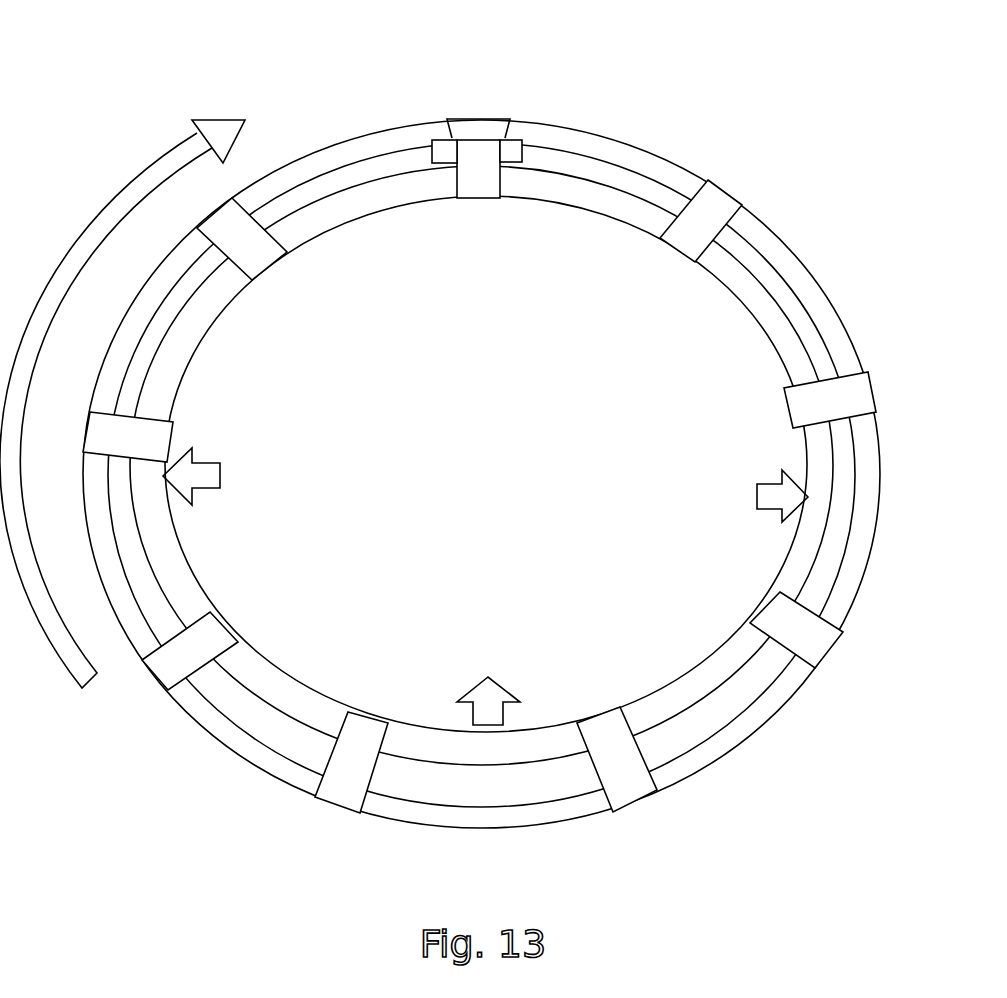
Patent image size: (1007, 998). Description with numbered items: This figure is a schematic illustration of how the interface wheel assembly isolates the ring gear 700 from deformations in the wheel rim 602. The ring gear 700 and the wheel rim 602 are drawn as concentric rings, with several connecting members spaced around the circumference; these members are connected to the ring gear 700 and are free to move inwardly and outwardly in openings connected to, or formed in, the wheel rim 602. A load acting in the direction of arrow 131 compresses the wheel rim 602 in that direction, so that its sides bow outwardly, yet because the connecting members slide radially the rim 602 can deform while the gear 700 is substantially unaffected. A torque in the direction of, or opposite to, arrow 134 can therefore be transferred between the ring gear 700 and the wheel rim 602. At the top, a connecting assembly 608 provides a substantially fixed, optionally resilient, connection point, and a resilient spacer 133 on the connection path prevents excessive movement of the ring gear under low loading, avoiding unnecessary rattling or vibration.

The ring gear 700 is at (622, 152).
The wheel rim 602 is at (592, 203).
The connecting assembly 608 is at (477, 187).
The resilient spacer 133 is at (445, 152).
The arrow indicating load direction 131 is at (490, 692).
The arrow indicating torque direction 134 is at (112, 210).